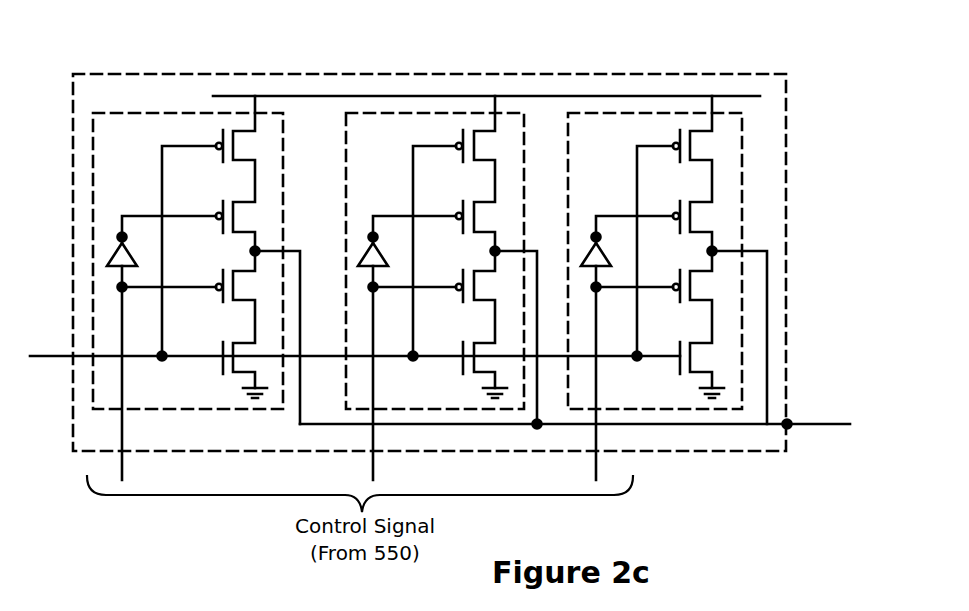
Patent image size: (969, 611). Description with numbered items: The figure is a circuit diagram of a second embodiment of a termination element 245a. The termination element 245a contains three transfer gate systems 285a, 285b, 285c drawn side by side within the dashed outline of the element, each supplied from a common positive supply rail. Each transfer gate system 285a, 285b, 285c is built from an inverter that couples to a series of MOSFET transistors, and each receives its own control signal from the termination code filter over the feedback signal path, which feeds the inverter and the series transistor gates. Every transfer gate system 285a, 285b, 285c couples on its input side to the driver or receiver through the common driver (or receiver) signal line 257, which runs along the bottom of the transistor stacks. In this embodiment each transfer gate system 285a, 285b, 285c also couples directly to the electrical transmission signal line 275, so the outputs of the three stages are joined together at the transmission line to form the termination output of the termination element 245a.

The termination element 245a is at (712, 74).
The transfer gate system 285a is at (93, 174).
The transfer gate system 285b is at (503, 113).
The transfer gate system 285c is at (742, 143).
The driver (or receiver) signal line 257 is at (50, 360).
The electrical transmission signal line 275 is at (810, 426).